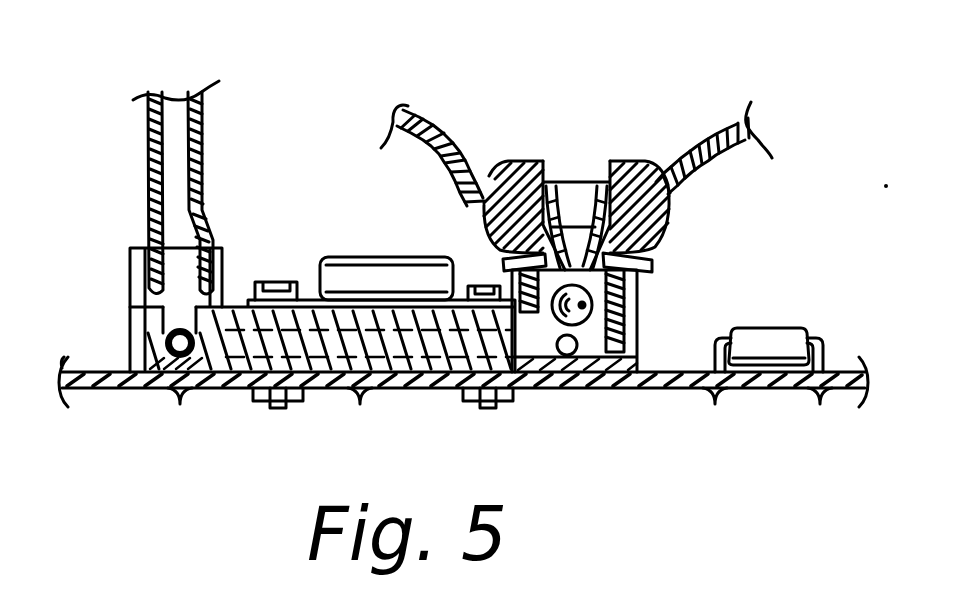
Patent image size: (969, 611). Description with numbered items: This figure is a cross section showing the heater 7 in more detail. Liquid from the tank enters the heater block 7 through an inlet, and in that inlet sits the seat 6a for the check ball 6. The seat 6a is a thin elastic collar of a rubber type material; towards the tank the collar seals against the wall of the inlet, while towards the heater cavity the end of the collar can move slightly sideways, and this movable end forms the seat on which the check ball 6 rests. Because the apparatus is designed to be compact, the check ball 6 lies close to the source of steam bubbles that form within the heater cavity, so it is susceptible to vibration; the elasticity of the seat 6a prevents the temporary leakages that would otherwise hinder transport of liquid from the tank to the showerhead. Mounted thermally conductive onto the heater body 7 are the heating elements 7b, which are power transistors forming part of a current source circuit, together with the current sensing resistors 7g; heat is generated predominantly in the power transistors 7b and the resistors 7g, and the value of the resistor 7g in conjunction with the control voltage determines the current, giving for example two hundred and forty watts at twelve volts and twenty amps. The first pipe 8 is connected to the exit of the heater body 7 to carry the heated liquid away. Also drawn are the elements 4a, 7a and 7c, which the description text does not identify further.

The connector plug 4a is at (632, 177).
The check ball 6 is at (584, 306).
The seat for check ball 6a is at (636, 265).
The heater 7 is at (342, 346).
The base plate 7a is at (585, 392).
The heating element 7b is at (362, 270).
The component on base plate 7c is at (777, 345).
The current sensing resistor 7g is at (133, 250).
The first pipe 8 is at (186, 128).